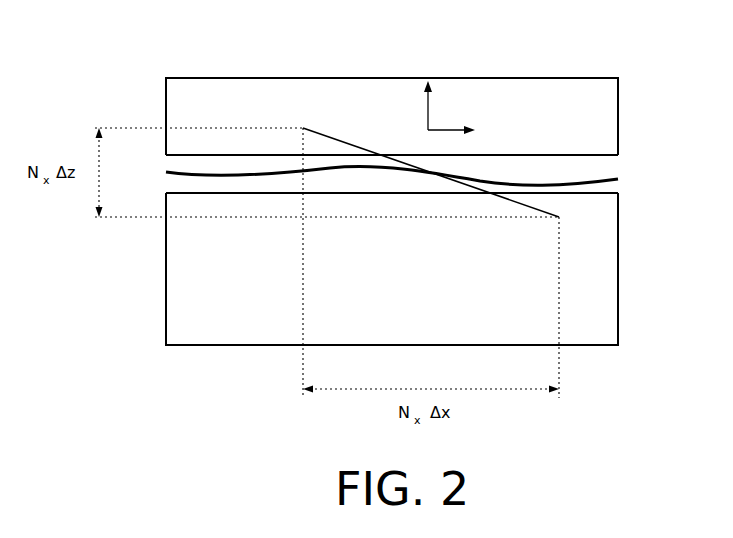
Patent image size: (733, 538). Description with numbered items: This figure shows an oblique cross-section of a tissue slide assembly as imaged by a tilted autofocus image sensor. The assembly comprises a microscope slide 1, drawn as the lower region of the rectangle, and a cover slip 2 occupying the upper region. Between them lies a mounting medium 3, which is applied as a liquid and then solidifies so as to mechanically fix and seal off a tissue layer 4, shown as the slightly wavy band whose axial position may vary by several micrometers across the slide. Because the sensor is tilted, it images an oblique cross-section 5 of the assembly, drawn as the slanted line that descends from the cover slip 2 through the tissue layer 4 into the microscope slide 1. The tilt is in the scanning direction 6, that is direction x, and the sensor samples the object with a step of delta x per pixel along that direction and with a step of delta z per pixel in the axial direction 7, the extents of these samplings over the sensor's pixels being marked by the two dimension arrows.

The microscope slide 1 is at (612, 273).
The cover slip 2 is at (612, 104).
The mounting medium 3 is at (612, 160).
The tissue layer 4 is at (612, 180).
The oblique cross-section 5 is at (308, 129).
The scanning direction 6 is at (458, 129).
The axial direction 7 is at (428, 112).